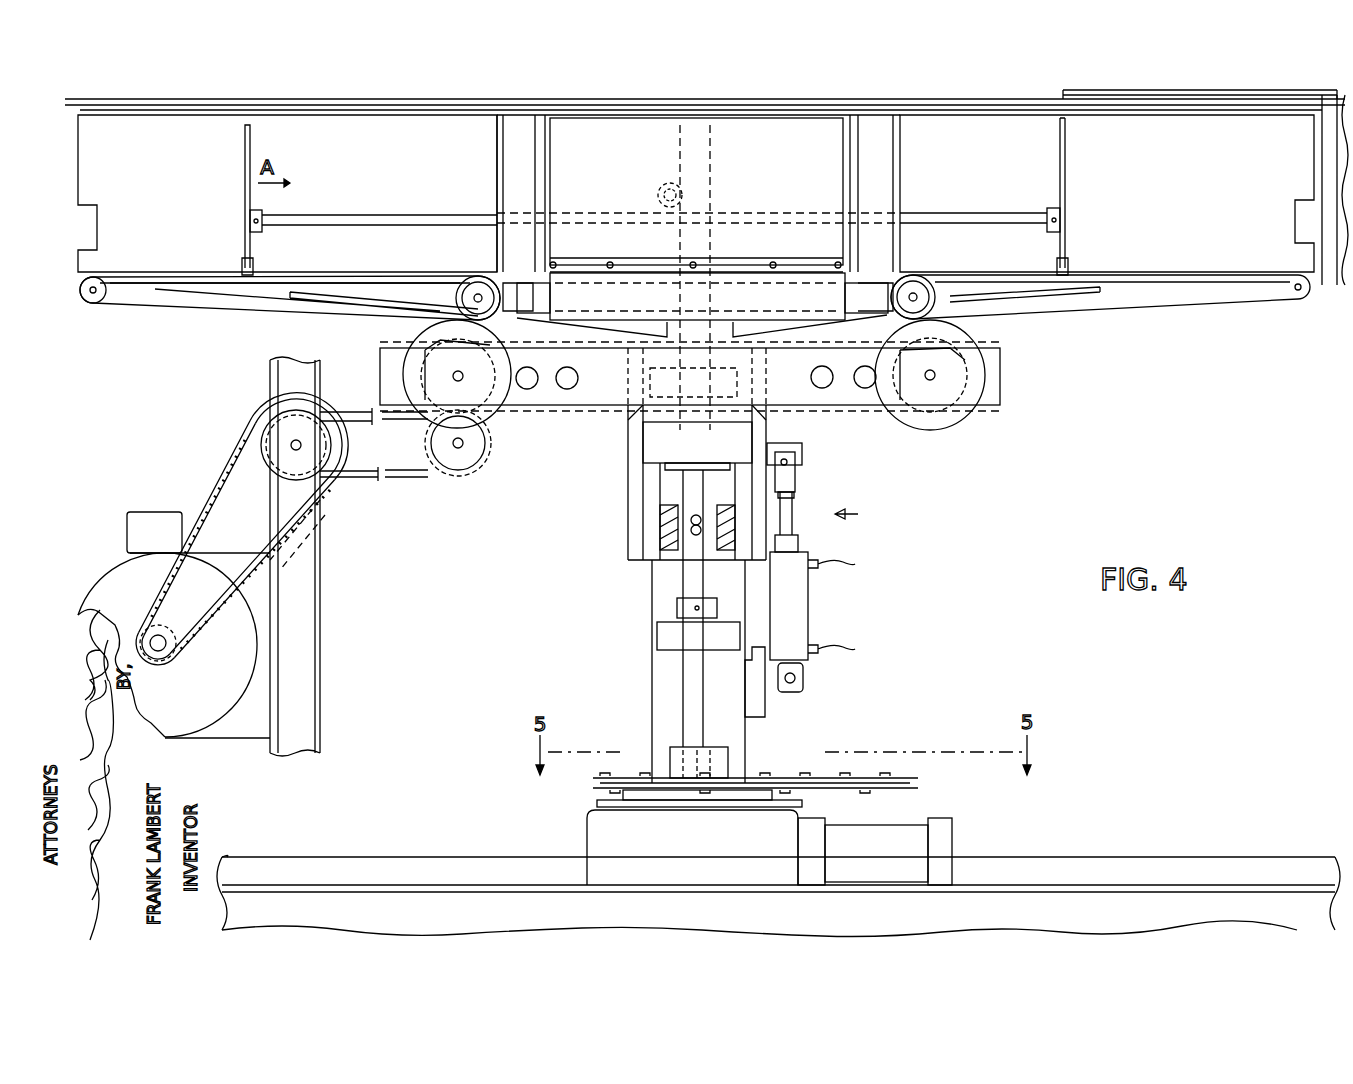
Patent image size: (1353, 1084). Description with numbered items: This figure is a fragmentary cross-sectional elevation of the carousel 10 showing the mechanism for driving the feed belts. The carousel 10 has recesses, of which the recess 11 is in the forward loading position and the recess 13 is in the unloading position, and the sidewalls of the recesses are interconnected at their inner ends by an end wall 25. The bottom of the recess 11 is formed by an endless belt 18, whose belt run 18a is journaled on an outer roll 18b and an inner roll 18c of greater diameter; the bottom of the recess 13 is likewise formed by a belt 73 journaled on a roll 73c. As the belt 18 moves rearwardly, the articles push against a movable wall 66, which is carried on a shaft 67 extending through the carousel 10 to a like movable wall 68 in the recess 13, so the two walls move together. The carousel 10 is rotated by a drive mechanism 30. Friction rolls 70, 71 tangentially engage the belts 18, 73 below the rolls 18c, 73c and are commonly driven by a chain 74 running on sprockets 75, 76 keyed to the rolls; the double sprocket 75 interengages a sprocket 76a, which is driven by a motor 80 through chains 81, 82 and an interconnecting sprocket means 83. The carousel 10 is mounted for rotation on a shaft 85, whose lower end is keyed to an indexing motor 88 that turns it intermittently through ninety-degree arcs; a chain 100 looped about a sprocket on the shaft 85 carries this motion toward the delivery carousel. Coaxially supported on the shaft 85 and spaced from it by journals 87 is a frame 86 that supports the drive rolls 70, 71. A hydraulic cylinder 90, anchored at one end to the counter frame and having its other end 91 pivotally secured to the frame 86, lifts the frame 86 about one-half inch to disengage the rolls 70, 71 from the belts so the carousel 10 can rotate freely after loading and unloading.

The carousel 10 is at (797, 94).
The recess 11 is at (296, 130).
The recess 13 is at (1212, 170).
The endless belt 18 is at (290, 285).
The conveyor belt 18a is at (238, 311).
The roll 18b is at (99, 280).
The inner roll 18c is at (470, 293).
The end wall 25 is at (488, 168).
The drive mechanism 30 is at (863, 514).
The movable wall 66 is at (245, 155).
The shaft 67 is at (372, 218).
The movable wall 68 is at (1065, 183).
The friction drive roll 70 is at (408, 343).
The friction drive roll 71 is at (980, 355).
The belt 73 is at (1100, 278).
The roll 73c is at (917, 295).
The chain 74 is at (562, 409).
The double sprocket 75 is at (475, 390).
The sprocket 76 is at (940, 390).
The sprocket 76a is at (470, 458).
The motor 80 is at (240, 660).
The chain 81 is at (325, 482).
The chain 82 is at (420, 478).
The interconnecting sprocket means 83 is at (330, 420).
The shaft 85 is at (698, 696).
The frame 86 is at (636, 495).
The journals 87 is at (660, 440).
The indexing motor 88 is at (585, 835).
The hydraulic cylinder 90 is at (800, 605).
The end of hydraulic cylinder 91 is at (795, 478).
The chain 100 is at (884, 776).